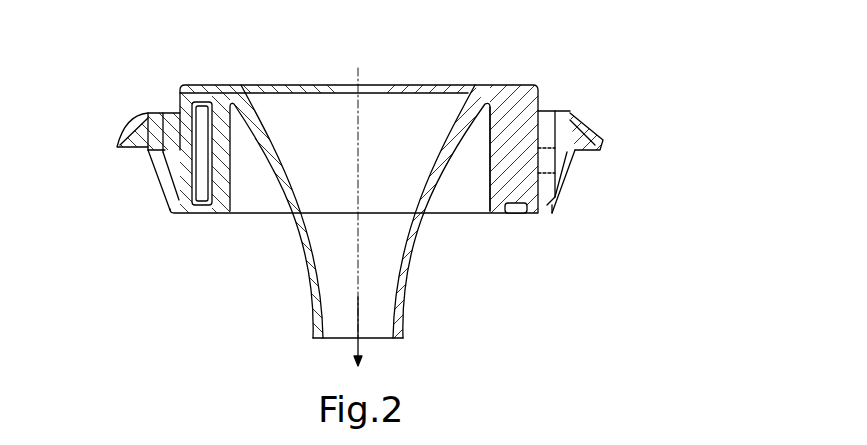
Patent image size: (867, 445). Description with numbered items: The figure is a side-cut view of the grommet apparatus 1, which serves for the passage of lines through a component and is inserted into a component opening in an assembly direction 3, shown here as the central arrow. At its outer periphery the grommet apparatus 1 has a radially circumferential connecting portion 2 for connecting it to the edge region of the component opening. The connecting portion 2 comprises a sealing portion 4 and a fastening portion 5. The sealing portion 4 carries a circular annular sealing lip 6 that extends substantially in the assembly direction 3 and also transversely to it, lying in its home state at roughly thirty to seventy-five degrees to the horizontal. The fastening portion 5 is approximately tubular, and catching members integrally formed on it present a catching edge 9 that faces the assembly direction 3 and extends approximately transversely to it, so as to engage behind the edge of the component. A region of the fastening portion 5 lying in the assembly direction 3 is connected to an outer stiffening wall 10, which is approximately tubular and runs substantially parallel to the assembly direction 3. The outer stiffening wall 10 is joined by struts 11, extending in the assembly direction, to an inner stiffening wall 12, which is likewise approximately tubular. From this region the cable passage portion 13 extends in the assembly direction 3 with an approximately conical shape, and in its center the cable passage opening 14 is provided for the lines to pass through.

The grommet apparatus 1 is at (707, 40).
The connecting portion 2 is at (568, 172).
The assembly direction 3 is at (363, 340).
The sealing portion 4 is at (580, 113).
The fastening portion 5 is at (165, 161).
The sealing lip 6 is at (575, 145).
The catching edge 9 is at (575, 150).
The outer stiffening wall 10 is at (186, 180).
The struts 11 is at (520, 187).
The inner stiffening wall 12 is at (218, 208).
The cable passage portion 13 is at (403, 287).
The cable passage opening 14 is at (337, 325).